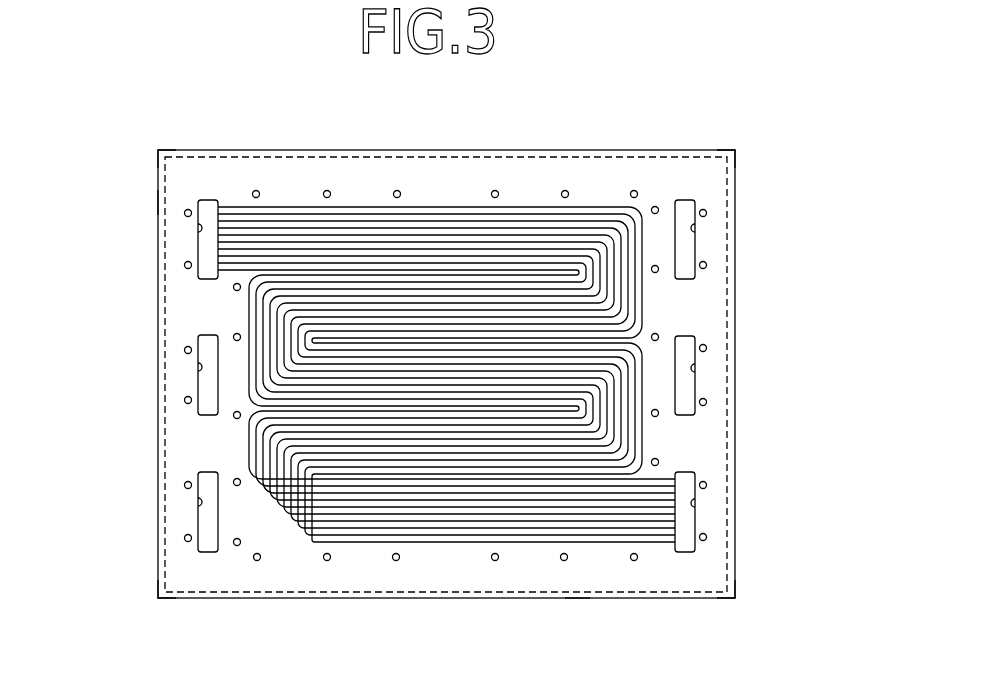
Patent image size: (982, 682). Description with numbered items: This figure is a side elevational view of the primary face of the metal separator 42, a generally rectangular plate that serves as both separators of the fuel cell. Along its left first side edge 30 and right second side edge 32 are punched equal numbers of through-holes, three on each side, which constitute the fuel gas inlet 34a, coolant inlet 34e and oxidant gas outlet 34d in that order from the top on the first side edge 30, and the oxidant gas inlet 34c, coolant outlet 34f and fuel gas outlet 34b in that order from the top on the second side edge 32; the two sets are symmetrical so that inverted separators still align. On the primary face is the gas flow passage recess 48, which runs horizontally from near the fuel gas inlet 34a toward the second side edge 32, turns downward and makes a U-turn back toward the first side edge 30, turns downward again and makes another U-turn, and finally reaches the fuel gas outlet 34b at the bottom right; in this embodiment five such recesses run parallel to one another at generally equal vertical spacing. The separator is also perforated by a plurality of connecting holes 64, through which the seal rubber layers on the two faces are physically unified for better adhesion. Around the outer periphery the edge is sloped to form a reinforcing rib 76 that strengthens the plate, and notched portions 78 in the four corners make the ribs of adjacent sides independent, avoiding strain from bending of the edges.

The metal separator 42 is at (727, 113).
The first side edge 30 is at (197, 305).
The second side edge 32 is at (695, 442).
The fuel gas inlet 34a is at (198, 228).
The fuel gas outlet 34b is at (695, 503).
The oxidant gas inlet 34c is at (695, 228).
The oxidant gas outlet 34d is at (198, 502).
The coolant inlet 34e is at (198, 367).
The coolant outlet 34f is at (695, 368).
The gas flow passage recess 48 is at (345, 293).
The connecting holes 64 is at (496, 191).
The reinforcing rib 76 is at (160, 203).
The notched portion 78 is at (157, 153).